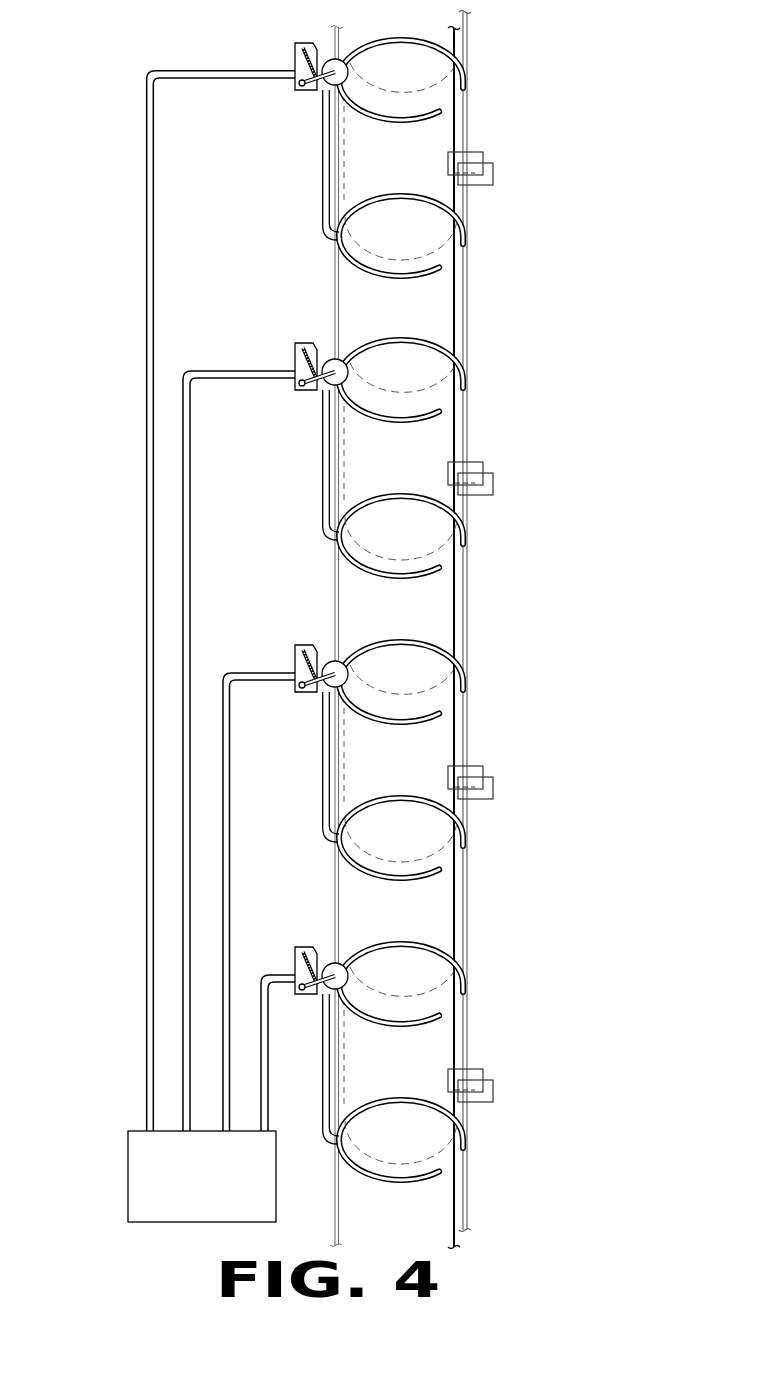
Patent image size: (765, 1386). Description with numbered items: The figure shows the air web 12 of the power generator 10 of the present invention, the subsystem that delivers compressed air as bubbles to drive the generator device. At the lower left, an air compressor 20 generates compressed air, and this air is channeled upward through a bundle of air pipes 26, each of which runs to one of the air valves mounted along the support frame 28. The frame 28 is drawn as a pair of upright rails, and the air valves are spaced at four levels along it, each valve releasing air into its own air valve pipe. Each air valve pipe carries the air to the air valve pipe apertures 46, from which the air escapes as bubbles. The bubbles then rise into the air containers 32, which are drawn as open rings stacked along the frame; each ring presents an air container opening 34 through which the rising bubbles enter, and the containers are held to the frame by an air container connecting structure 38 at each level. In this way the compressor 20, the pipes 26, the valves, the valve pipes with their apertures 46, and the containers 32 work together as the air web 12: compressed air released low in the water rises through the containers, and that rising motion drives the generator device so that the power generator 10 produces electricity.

The power generator 10 is at (352, 630).
The air web 12 is at (130, 405).
The air compressor 20 is at (246, 1192).
The air pipe 26 is at (263, 1090).
The frame 28 is at (335, 1227).
The air container 32 is at (446, 387).
The air container opening 34 is at (470, 567).
The air container connecting structure 38 is at (492, 483).
The air valve pipe apertures 46 is at (455, 605).